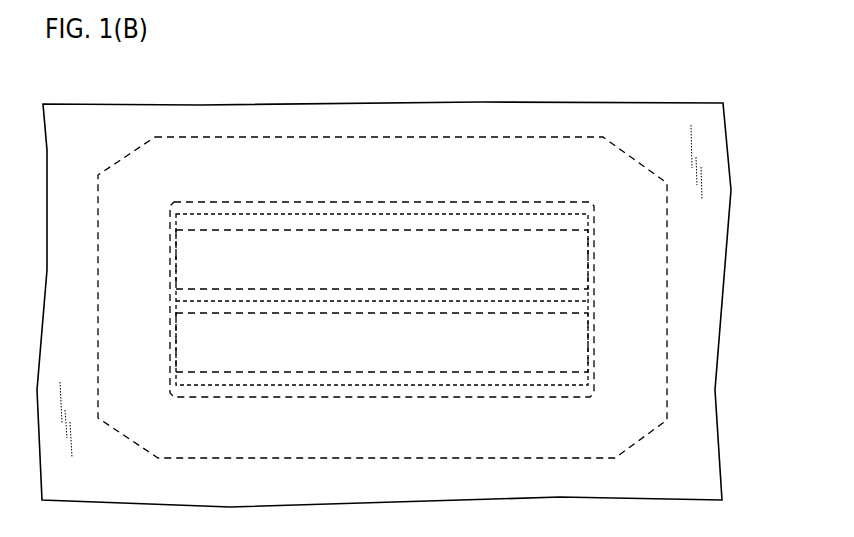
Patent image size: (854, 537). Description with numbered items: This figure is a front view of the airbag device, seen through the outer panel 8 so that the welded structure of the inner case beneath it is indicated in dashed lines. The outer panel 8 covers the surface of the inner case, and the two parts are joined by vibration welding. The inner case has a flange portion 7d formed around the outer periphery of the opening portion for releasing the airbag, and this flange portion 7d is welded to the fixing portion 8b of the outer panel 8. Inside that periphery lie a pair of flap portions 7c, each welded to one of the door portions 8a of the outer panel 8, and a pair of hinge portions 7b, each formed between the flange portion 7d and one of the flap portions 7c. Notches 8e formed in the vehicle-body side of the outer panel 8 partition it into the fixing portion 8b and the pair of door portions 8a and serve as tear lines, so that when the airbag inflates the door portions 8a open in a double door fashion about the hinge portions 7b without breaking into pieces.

The outer panel 8 is at (585, 118).
The hinge portion 7b is at (218, 223).
The flap portion 7c is at (382, 302).
The flange portion 7d is at (382, 250).
The door portion 8a is at (373, 263).
The fixing portion 8b is at (503, 163).
The notches 8e is at (533, 213).